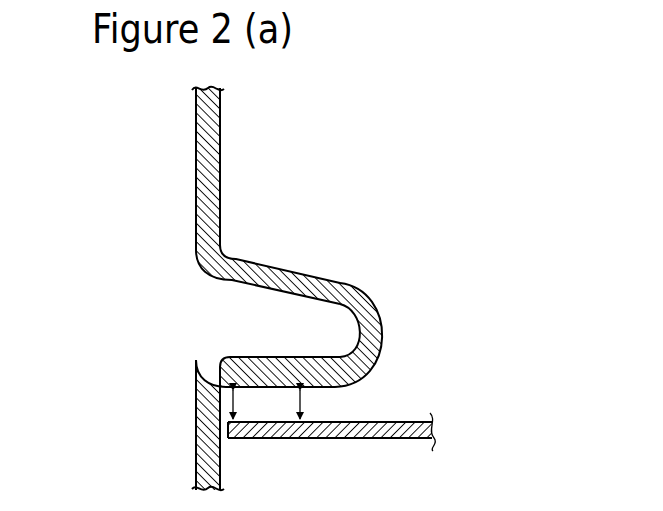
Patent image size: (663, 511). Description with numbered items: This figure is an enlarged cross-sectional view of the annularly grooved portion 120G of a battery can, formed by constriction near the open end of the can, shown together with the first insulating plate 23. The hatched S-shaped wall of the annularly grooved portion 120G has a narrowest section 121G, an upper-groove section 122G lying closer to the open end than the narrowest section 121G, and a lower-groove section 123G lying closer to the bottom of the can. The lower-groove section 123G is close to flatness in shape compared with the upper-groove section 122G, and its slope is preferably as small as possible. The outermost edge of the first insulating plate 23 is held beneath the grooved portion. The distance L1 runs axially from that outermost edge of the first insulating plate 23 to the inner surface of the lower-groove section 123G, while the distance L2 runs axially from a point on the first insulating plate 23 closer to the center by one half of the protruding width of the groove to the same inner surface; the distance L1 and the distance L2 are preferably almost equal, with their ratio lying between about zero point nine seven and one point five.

The annularly grooved portion 120G is at (152, 301).
The narrowest section 121G is at (381, 333).
The upper-groove section 122G is at (288, 268).
The lower-groove section 123G is at (282, 388).
The first insulating plate 23 is at (413, 440).
The distance L1 is at (228, 407).
The distance L2 is at (310, 405).